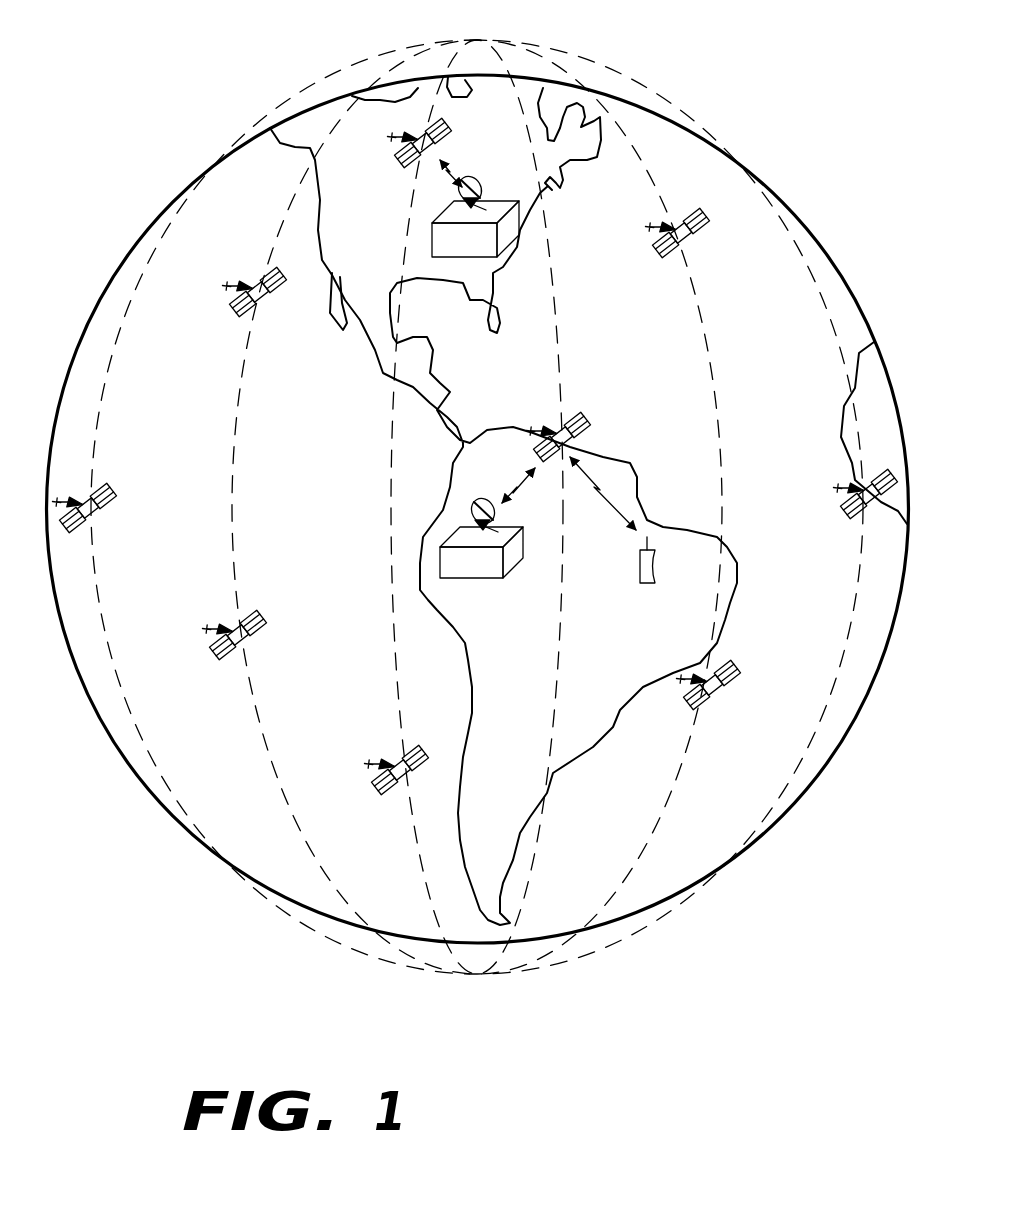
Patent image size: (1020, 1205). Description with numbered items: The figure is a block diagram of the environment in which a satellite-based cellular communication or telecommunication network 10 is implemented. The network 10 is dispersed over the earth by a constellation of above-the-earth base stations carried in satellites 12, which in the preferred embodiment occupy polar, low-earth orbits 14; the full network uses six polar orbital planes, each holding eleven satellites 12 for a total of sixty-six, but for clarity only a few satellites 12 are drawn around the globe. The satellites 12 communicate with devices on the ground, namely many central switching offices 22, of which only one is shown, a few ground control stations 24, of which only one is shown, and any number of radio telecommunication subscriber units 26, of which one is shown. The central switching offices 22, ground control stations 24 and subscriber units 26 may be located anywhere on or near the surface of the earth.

The satellite-based cellular telecommunication network 10 is at (475, 978).
The satellite 12 is at (405, 165).
The polar, low-earth orbit 14 is at (292, 210).
The central switching office (CSO) 22 is at (480, 580).
The ground control station (GCS) 24 is at (498, 200).
The subscriber unit (SU) 26 is at (647, 585).